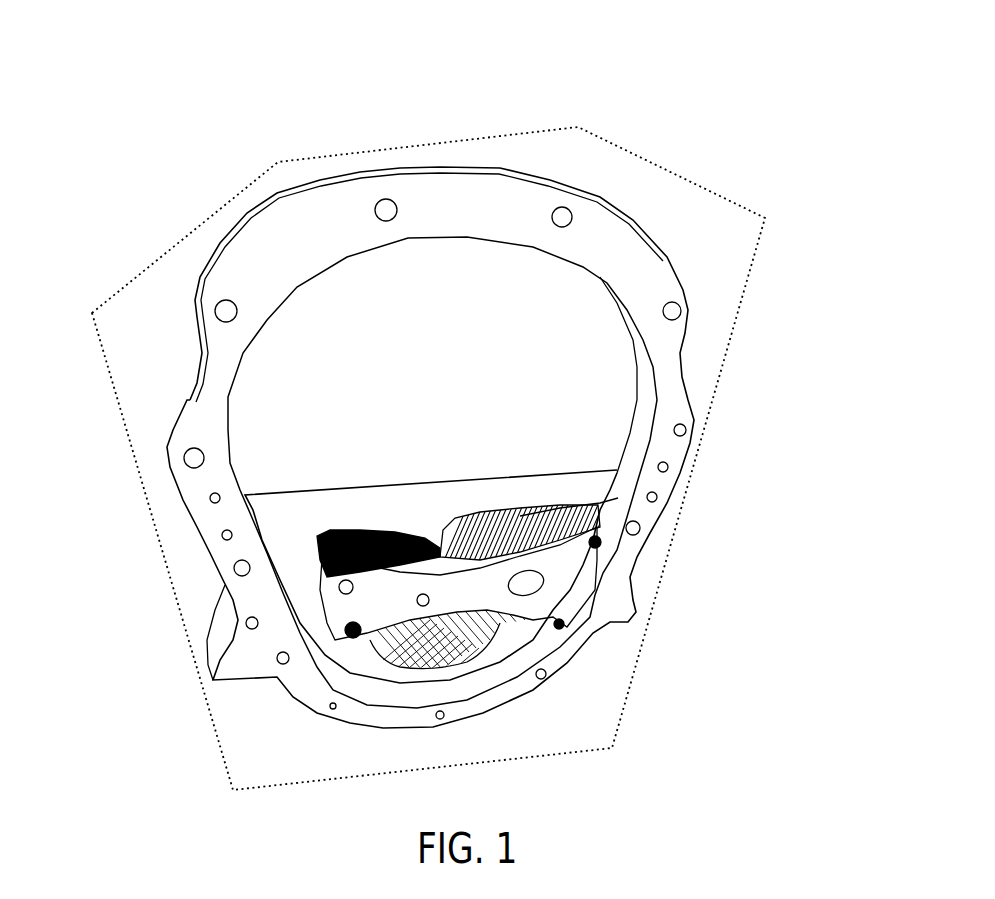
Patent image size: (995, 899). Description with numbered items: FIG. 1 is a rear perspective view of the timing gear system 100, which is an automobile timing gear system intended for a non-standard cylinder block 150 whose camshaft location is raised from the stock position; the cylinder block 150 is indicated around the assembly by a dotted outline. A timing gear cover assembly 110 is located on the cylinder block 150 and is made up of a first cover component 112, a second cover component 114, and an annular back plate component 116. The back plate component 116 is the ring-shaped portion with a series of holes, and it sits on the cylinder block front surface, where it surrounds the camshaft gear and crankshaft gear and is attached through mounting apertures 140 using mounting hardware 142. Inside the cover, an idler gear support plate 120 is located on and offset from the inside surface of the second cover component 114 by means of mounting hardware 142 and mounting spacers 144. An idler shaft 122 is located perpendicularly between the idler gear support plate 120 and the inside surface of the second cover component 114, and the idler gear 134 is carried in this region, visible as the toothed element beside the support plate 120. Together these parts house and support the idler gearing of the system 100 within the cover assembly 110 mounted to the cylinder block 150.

The timing gear system 100 is at (366, 108).
The timing gear cover assembly 110 is at (664, 192).
The first cover component 112 is at (345, 330).
The second cover component 114 is at (295, 523).
The back plate component 116 is at (630, 269).
The idler gear support plate 120 is at (563, 563).
The idler shaft 122 is at (523, 580).
The idler gear 134 is at (520, 520).
The aperture 140 is at (333, 710).
The hardware 142 is at (353, 637).
The spacer 144 is at (598, 527).
The cylinder block 150 is at (158, 258).